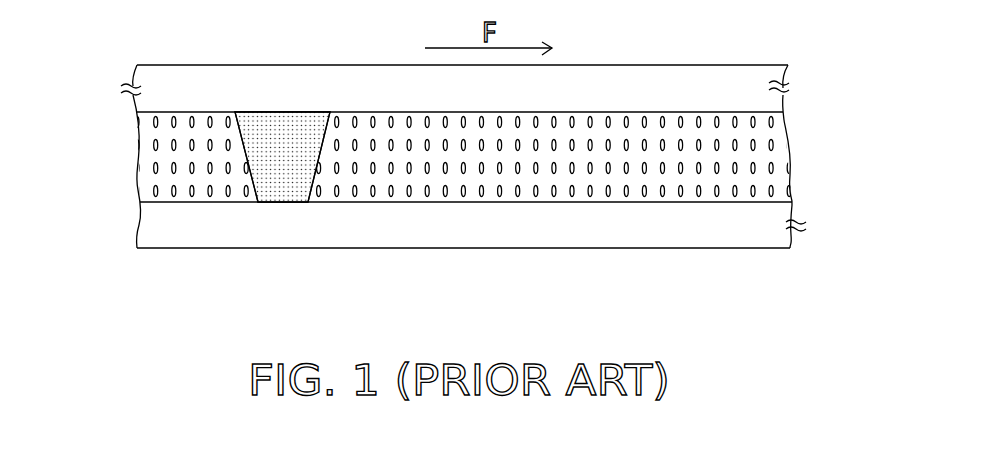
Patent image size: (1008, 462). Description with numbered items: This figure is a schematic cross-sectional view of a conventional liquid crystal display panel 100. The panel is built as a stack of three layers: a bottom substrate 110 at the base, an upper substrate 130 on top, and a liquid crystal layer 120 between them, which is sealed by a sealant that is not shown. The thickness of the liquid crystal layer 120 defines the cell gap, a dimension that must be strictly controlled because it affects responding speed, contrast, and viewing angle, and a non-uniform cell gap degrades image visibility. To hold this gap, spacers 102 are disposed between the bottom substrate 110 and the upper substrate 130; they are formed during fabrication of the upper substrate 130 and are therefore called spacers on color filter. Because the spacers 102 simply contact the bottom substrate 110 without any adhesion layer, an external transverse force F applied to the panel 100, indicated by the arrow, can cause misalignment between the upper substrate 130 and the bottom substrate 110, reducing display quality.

The liquid crystal display panel 100 is at (790, 292).
The spacers 102 is at (282, 120).
The bottom substrate 110 is at (138, 209).
The liquid crystal layer 120 is at (135, 158).
The upper substrate 130 is at (133, 101).